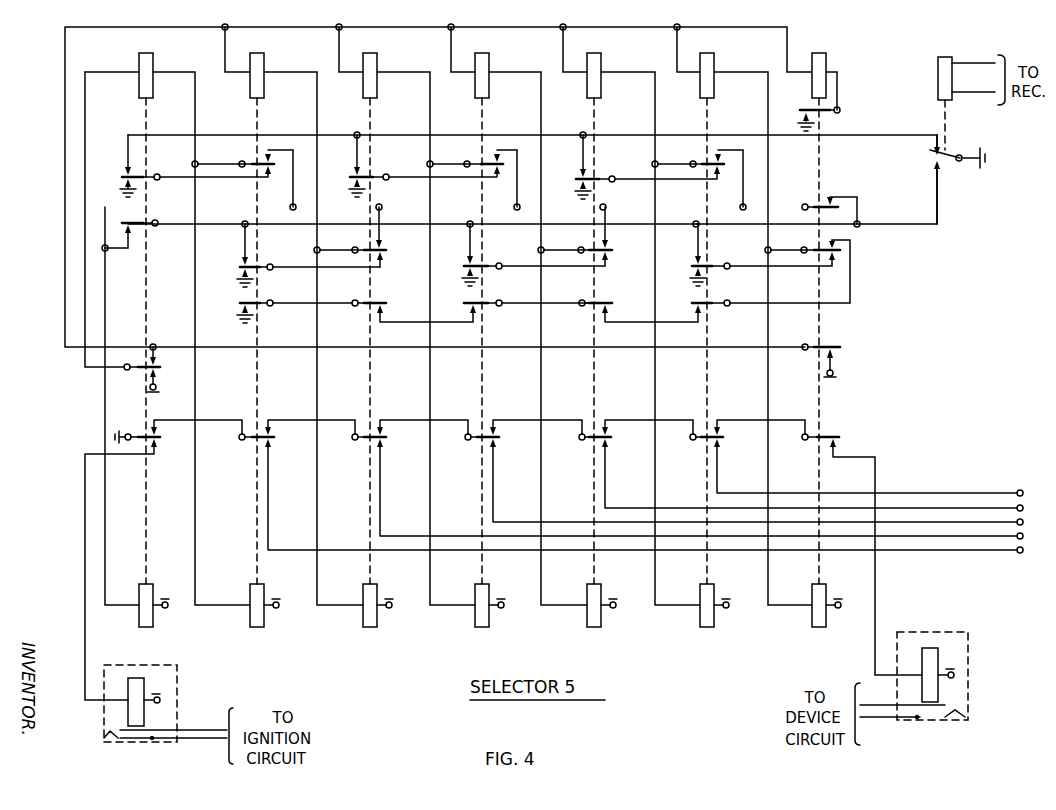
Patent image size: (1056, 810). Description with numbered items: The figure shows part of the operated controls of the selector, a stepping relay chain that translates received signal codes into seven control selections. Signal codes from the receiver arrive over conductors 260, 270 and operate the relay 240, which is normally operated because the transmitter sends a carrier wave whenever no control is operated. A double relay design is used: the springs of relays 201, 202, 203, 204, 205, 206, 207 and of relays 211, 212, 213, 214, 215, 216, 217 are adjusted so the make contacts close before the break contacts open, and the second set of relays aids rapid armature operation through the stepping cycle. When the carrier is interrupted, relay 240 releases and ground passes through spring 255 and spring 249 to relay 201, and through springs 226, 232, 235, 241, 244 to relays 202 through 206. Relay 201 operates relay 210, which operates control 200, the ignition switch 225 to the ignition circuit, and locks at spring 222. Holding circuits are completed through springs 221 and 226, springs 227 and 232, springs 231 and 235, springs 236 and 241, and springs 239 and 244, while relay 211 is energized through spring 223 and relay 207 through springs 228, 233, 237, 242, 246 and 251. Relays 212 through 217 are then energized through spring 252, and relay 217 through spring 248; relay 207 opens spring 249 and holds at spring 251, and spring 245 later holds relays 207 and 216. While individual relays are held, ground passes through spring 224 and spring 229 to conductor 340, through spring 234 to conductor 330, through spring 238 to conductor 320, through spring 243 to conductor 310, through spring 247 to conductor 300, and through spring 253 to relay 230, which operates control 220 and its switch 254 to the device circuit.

The control 200 is at (168, 744).
The relay 201 is at (147, 627).
The relay 202 is at (258, 627).
The relay 203 is at (371, 627).
The relay 204 is at (483, 627).
The relay 205 is at (595, 627).
The relay 206 is at (708, 627).
The relay 207 is at (820, 627).
The relay 210 is at (136, 686).
The relay 211 is at (148, 58).
The relay 212 is at (259, 58).
The relay 213 is at (372, 58).
The relay 214 is at (484, 58).
The relay 215 is at (596, 58).
The relay 216 is at (709, 58).
The relay 217 is at (821, 58).
The control 220 is at (932, 695).
The spring 221 is at (132, 174).
The spring 222 is at (140, 226).
The spring 223 is at (135, 373).
The spring 224 is at (150, 428).
The ignition switch 225 is at (104, 738).
The spring 226 is at (248, 160).
The spring 227 is at (250, 264).
The spring 228 is at (244, 300).
The spring 229 is at (246, 440).
The relay 230 is at (932, 648).
The spring 231 is at (372, 176).
The spring 232 is at (362, 250).
The spring 233 is at (374, 302).
The spring 234 is at (366, 440).
The spring 235 is at (478, 160).
The spring 236 is at (488, 265).
The spring 237 is at (527, 291).
The spring 238 is at (478, 440).
The spring 239 is at (603, 167).
The relay 240 is at (938, 80).
The spring 241 is at (586, 250).
The spring 242 is at (643, 299).
The spring 243 is at (590, 440).
The spring 244 is at (701, 162).
The spring 245 is at (712, 265).
The spring 246 is at (771, 273).
The spring 247 is at (702, 440).
The spring 248 is at (828, 112).
The spring 249 is at (813, 205).
The spring 251 is at (812, 250).
The spring 252 is at (812, 350).
The spring 253 is at (815, 440).
The control switch 254 is at (967, 716).
The spring 255 is at (932, 153).
The conductor 260 is at (979, 62).
The conductor 270 is at (985, 96).
The conductor 300 is at (982, 494).
The conductor 310 is at (972, 509).
The conductor 320 is at (963, 523).
The conductor 330 is at (945, 537).
The conductor 340 is at (955, 551).